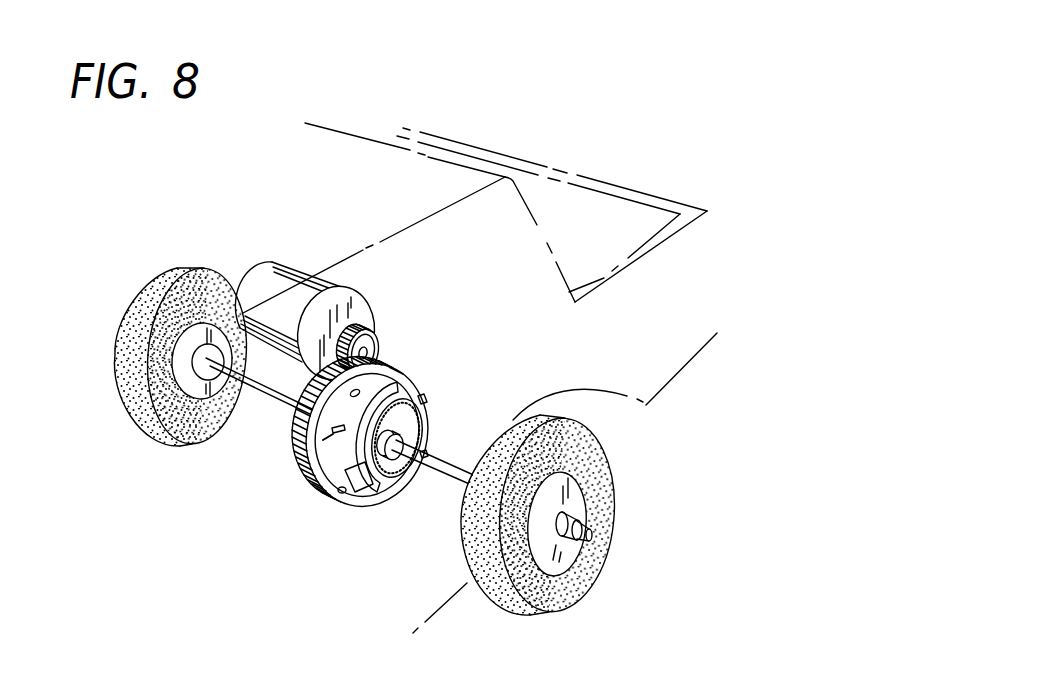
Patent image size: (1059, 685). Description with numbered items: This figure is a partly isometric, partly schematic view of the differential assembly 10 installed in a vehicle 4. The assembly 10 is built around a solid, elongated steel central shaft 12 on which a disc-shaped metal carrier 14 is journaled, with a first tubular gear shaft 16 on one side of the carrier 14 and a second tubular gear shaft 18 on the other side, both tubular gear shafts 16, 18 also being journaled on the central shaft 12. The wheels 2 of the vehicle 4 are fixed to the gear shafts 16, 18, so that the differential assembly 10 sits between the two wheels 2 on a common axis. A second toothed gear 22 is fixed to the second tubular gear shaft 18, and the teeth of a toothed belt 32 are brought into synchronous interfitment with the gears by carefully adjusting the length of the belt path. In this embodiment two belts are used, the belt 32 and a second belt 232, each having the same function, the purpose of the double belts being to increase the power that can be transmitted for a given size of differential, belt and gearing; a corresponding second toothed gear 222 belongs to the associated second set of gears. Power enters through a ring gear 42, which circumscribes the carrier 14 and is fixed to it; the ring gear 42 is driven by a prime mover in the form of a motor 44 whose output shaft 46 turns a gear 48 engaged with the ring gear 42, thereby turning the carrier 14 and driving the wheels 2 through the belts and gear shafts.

The wheels 2 is at (143, 307).
The vehicle 4 is at (457, 165).
The differential assembly 10 is at (342, 391).
The central shaft 12 is at (593, 538).
The carrier 14 is at (367, 440).
The first tubular gear shaft 16 is at (257, 403).
The second tubular gear shaft 18 is at (452, 467).
The second toothed gear 22 is at (385, 395).
The belt 32 is at (303, 428).
The ring gear 42 is at (312, 488).
The motor 44 is at (280, 275).
The output shaft 46 is at (350, 322).
The gear 48 is at (398, 340).
The second toothed gear 222 is at (405, 417).
The belt 232 is at (373, 470).